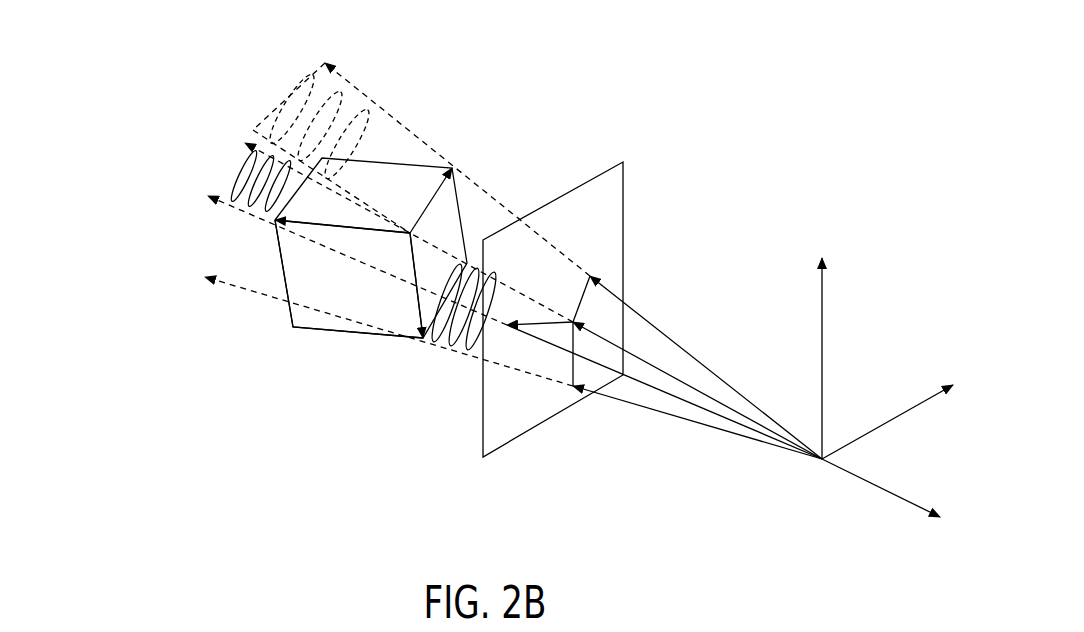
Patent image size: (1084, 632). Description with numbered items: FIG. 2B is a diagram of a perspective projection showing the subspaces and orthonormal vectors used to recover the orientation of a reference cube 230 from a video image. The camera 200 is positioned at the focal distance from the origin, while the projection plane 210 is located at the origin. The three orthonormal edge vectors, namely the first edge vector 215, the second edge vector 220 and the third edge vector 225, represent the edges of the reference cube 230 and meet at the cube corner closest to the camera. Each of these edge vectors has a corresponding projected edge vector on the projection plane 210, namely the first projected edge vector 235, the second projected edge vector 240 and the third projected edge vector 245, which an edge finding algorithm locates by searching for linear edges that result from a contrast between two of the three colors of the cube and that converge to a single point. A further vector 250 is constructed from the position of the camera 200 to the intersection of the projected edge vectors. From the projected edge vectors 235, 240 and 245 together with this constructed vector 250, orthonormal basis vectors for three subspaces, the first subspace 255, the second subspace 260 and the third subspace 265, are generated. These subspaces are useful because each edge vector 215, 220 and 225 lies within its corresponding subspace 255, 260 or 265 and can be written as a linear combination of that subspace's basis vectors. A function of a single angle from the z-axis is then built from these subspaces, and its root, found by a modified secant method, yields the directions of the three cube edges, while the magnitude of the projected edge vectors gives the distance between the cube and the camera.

The camera 200 is at (817, 461).
The projection plane 210 is at (610, 198).
The edge vector e1 215 is at (444, 193).
The edge vector e2 220 is at (343, 233).
The edge vector e3 225 is at (411, 295).
The reference cube 230 is at (297, 263).
The projected edge vector p1 235 is at (648, 316).
The projected edge vector p2 240 is at (637, 384).
The projected edge vector p3 245 is at (709, 429).
The vector pz 250 is at (689, 381).
The subspace U1 255 is at (289, 94).
The subspace U2 260 is at (237, 163).
The subspace U3 265 is at (457, 337).